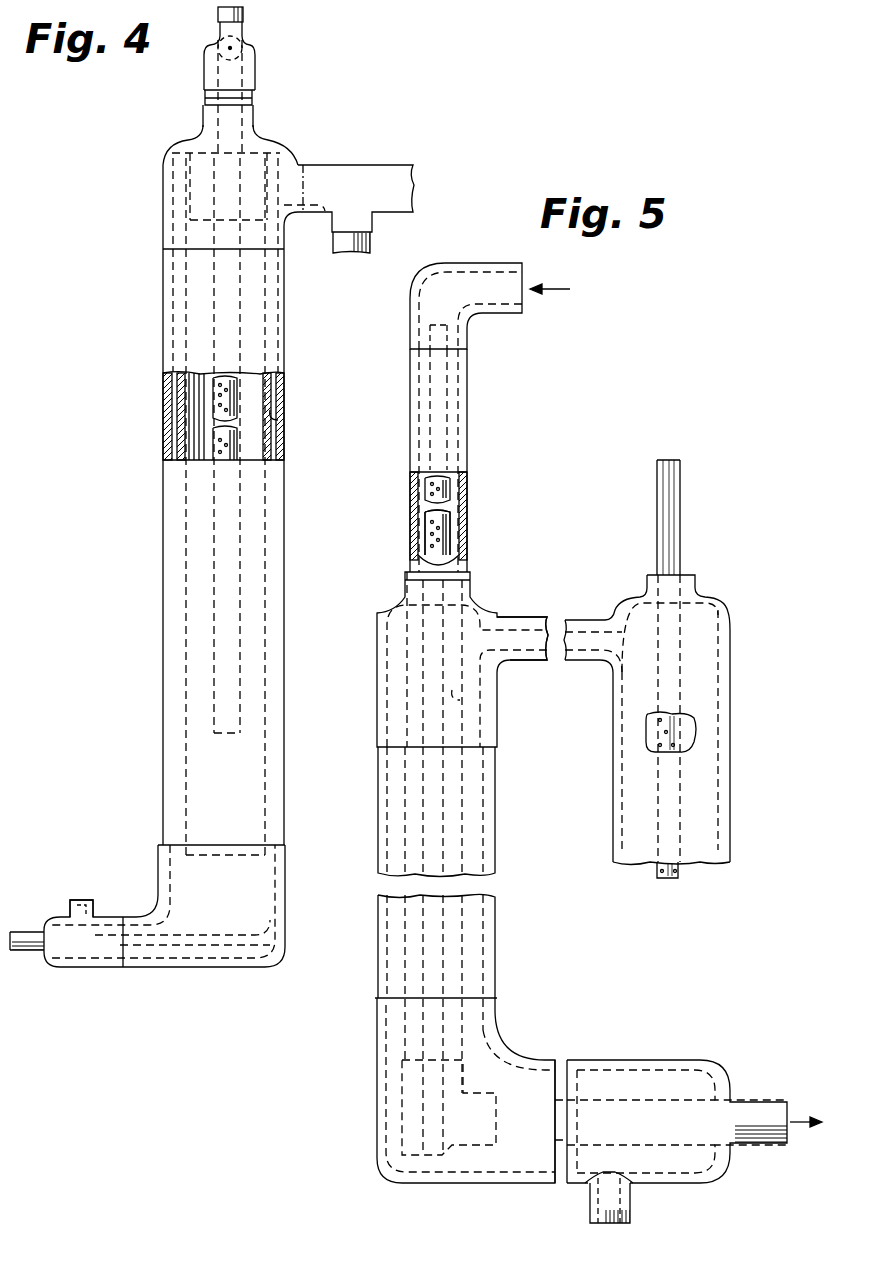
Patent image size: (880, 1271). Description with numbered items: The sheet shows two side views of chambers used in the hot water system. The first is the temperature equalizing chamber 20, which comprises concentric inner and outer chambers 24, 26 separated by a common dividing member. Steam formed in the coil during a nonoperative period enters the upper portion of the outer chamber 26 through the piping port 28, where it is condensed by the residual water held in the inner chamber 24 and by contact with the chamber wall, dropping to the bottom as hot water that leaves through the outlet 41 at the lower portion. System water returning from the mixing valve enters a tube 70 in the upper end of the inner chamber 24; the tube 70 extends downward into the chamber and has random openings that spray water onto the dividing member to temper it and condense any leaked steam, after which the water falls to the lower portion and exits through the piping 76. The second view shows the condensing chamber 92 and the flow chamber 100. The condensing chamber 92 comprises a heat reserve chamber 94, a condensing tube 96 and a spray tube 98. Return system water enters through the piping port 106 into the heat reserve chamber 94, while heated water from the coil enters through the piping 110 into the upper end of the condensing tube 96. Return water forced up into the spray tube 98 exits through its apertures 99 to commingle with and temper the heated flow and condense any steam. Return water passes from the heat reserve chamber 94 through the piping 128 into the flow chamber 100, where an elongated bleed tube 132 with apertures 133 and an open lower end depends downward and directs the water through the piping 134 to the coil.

In FIG. 4, the equalizing chamber 20 is at (290, 572).
In FIG. 4, the tube 70 is at (258, 118).
In FIG. 4, the piping port 28 is at (297, 163).
In FIG. 4, the inner chamber 24 is at (198, 338).
In FIG. 4, the outer chamber 26 is at (280, 414).
In FIG. 4, the outlet 41 is at (80, 898).
In FIG. 4, the piping 76 is at (38, 953).
In FIG. 5, the piping 110 is at (478, 265).
In FIG. 5, the spray tube 98 is at (448, 418).
In FIG. 5, the condensing chamber 92 is at (490, 520).
In FIG. 5, the condensing tube 96 is at (455, 500).
In FIG. 5, the apertures 99 is at (447, 535).
In FIG. 5, the piping 128 is at (542, 618).
In FIG. 5, the flow chamber 100 is at (732, 641).
In FIG. 5, the piping 134 is at (682, 500).
In FIG. 5, the apertures 133 is at (672, 735).
In FIG. 5, the bleed tube 132 is at (680, 790).
In FIG. 5, the heat reserve chamber 94 is at (475, 1033).
In FIG. 5, the piping port 106 is at (590, 1205).